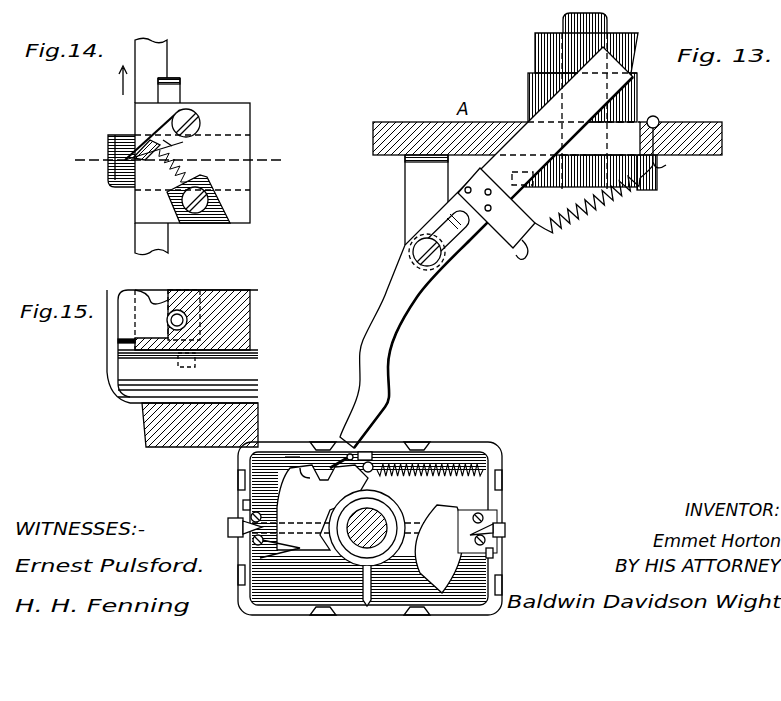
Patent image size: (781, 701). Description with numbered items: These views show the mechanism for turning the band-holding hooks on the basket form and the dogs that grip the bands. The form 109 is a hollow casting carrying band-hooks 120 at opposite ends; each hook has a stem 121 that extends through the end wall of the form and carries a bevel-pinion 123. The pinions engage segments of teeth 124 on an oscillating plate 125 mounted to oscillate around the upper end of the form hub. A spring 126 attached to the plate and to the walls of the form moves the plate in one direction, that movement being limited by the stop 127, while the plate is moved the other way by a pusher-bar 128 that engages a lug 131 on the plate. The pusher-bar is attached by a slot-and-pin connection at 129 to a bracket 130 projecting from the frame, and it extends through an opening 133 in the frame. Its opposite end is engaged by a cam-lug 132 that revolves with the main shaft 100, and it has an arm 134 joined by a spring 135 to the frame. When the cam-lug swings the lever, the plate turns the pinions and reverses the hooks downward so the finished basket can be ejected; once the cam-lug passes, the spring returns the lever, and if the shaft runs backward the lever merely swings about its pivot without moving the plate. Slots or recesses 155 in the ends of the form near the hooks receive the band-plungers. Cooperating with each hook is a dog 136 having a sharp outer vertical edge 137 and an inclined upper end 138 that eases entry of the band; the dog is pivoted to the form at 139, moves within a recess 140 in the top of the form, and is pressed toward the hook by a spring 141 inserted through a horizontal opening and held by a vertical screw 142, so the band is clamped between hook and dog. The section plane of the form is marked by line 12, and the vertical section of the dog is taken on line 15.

In FIG. 13, the main shaft 100 is at (607, 28).
In FIG. 13, the cam-lug 132 is at (591, 111).
In FIG. 13, the bracket 130 is at (426, 200).
In FIG. 13, the slot-and-pin connection 129 is at (414, 246).
In FIG. 13, the pusher-bar 128 is at (486, 247).
In FIG. 13, the arm 134 is at (505, 230).
In FIG. 13, the spring 135 is at (601, 213).
In FIG. 13, the opening 133 is at (653, 118).
In FIG. 13, the form 109 is at (391, 528).
In FIG. 13, the segments of teeth 124 is at (290, 455).
In FIG. 13, the oscillating plate 125 is at (322, 507).
In FIG. 13, the spring 126 is at (458, 470).
In FIG. 13, the stop 127 is at (310, 453).
In FIG. 13, the lug 131 is at (365, 443).
In FIG. 13, the bevel-pinions 123 is at (443, 512).
In FIG. 13, the band-hooks 120 is at (228, 524).
In FIG. 14, the band-hooks 120 is at (110, 140).
In FIG. 15, the band-hooks 120 is at (118, 378).
In FIG. 13, the slots or recesses 155 is at (243, 502).
In FIG. 14, the slots or recesses 155 is at (158, 82).
In FIG. 13, the section line 12 12 is at (538, 559).
In FIG. 14, the pivot 139 is at (190, 118).
In FIG. 14, the sharp outer vertical edge 137 is at (125, 160).
In FIG. 15, the sharp outer vertical edge 137 is at (118, 340).
In FIG. 14, the spring 141 is at (200, 157).
In FIG. 15, the spring 141 is at (190, 293).
In FIG. 14, the vertical screw 142 is at (210, 187).
In FIG. 14, the dogs 136 is at (163, 140).
In FIG. 15, the dogs 136 is at (162, 321).
In FIG. 14, the recess 140 is at (157, 165).
In FIG. 14, the section line 15 15 is at (182, 159).
In FIG. 15, the inclined upper end 138 is at (118, 290).
In FIG. 15, the stems 121 is at (200, 383).